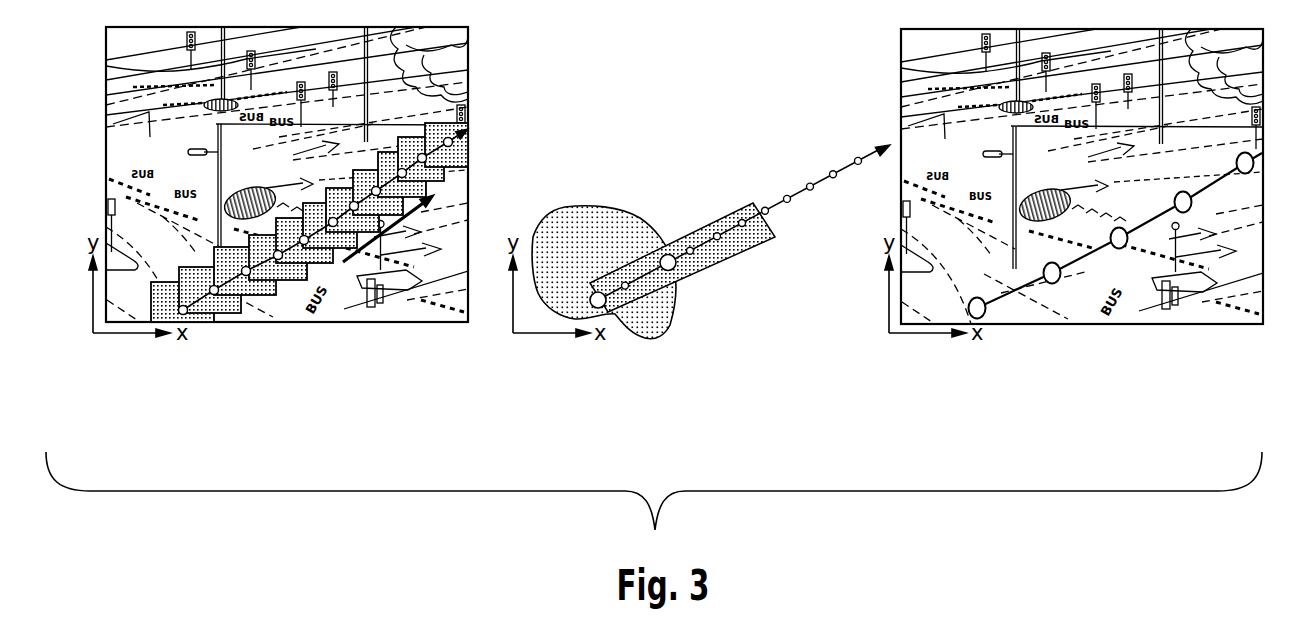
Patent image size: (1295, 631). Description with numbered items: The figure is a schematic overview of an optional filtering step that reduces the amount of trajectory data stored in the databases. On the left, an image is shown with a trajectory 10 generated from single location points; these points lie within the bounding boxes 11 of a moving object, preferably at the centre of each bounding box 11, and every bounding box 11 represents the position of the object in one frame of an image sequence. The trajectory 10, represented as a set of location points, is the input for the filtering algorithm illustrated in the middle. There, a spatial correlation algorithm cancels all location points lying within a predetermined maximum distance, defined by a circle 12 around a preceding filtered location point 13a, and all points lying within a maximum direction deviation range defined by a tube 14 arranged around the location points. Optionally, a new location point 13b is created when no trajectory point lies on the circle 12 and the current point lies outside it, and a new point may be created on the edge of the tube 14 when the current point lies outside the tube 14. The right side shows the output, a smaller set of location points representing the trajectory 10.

The trajectory 10 is at (279, 262).
The bounding boxes 11 is at (232, 258).
The circle 12 is at (672, 318).
The preceding filtered location point 13a is at (605, 309).
The new location point 13b is at (668, 254).
The tube 14 is at (728, 253).